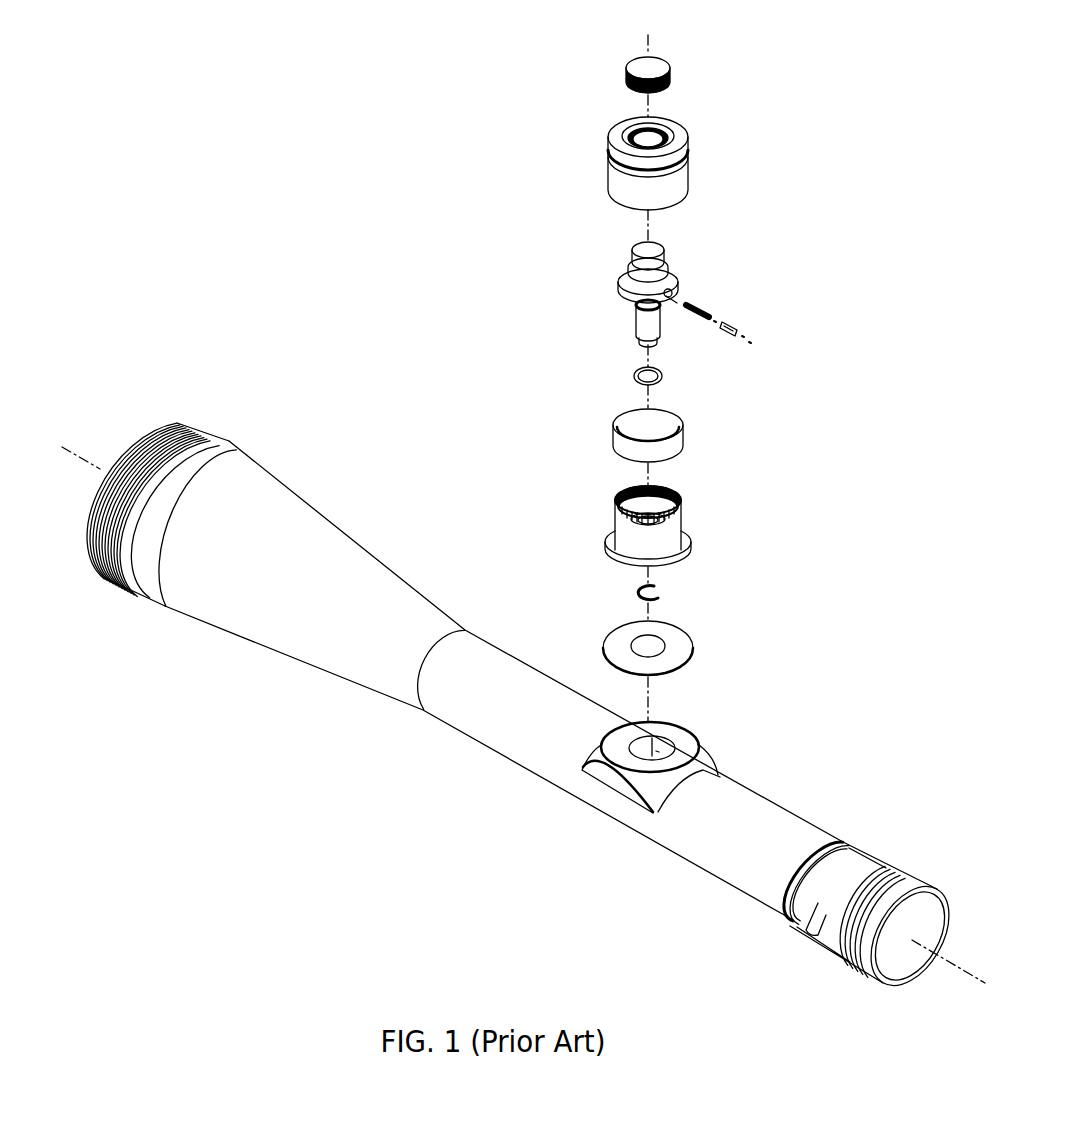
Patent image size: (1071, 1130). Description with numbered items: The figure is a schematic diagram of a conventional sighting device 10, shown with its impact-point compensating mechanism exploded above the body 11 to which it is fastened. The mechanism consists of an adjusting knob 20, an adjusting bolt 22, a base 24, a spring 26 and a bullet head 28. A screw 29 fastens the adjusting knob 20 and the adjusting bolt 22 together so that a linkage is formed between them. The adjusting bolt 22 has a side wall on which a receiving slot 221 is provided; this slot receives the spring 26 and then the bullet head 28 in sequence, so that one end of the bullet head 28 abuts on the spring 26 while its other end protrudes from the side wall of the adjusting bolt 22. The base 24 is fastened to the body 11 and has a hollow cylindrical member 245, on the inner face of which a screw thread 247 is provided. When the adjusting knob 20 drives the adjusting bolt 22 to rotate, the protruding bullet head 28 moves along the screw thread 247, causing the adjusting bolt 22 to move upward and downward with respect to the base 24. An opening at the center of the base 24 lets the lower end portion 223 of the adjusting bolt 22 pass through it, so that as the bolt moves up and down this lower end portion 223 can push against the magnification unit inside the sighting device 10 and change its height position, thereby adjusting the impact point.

The conventional sighting device 10 is at (163, 356).
The body 11 is at (512, 737).
The adjusting knob 20 is at (608, 165).
The adjusting bolt 22 is at (614, 283).
The receiving slot 221 is at (672, 292).
The lower end portion 223 is at (645, 318).
The base 24 is at (692, 538).
The hollow cylindrical member 245 is at (684, 520).
The screw thread 247 is at (622, 497).
The spring 26 is at (700, 308).
The bullet head 28 is at (738, 329).
The screw 29 is at (668, 67).